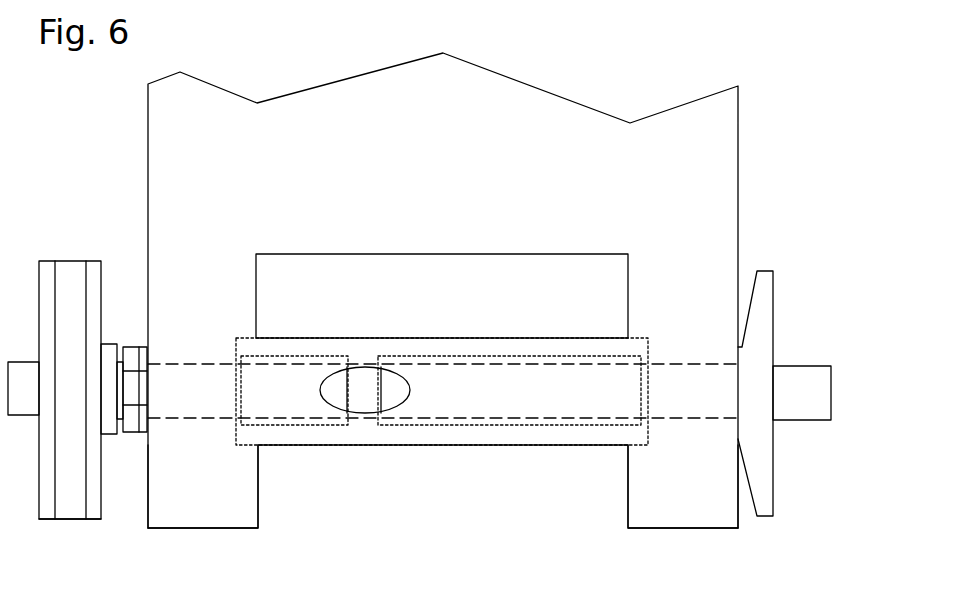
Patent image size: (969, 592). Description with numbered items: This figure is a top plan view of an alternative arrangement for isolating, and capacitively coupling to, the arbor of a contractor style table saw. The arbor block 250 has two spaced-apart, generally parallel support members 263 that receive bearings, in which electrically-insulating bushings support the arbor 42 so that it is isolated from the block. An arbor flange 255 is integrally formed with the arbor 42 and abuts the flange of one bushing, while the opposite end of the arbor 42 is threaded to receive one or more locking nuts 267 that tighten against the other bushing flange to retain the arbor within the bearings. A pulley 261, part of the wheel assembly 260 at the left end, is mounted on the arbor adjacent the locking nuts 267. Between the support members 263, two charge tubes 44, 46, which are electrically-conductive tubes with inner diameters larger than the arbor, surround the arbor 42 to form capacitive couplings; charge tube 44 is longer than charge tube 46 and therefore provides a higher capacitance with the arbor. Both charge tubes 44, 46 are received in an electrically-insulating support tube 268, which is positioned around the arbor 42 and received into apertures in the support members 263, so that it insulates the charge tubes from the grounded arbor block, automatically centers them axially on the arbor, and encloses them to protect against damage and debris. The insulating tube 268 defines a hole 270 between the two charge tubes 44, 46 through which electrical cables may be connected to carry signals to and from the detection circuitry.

The arbor block 250 is at (448, 161).
The support members 263 is at (177, 516).
The arbor 42 is at (791, 378).
The wheel 260 is at (71, 268).
The pulley 261 is at (46, 515).
The locking nuts 267 is at (142, 362).
The insulating tube 268 is at (413, 337).
The charge tube 46 is at (295, 352).
The charge tube 44 is at (528, 357).
The hole 270 is at (398, 408).
The arbor flange 255 is at (765, 293).